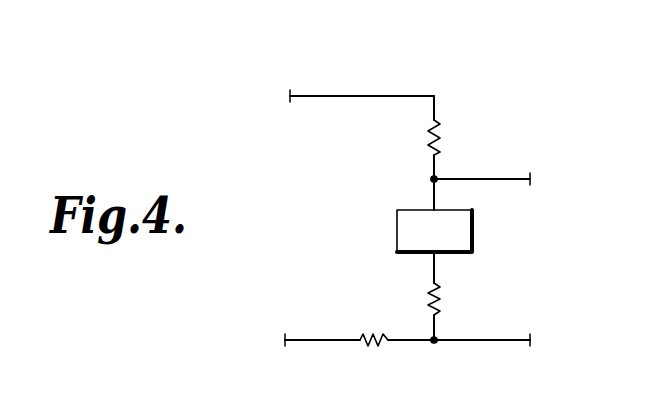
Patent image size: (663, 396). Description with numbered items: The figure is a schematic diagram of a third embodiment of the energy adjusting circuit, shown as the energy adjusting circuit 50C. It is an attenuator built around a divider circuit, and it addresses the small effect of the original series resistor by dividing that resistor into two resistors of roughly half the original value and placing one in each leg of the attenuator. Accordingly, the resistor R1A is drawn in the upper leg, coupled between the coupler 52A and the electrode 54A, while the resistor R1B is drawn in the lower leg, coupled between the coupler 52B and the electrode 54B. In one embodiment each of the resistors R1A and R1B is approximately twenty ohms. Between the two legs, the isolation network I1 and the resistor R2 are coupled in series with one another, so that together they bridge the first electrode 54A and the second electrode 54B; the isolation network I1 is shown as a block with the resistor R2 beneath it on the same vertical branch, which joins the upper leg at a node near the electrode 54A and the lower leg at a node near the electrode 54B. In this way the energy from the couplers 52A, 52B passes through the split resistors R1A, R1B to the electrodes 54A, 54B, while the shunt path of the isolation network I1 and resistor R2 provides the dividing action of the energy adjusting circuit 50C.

The energy adjusting circuit 50C is at (501, 72).
The coupler 52A is at (362, 96).
The coupler 52B is at (305, 340).
The electrode 54A is at (474, 179).
The electrode 54B is at (474, 340).
The resistor R1A is at (429, 134).
The resistor R1B is at (372, 334).
The resistor R2 is at (429, 298).
The isolation network I1 is at (473, 228).